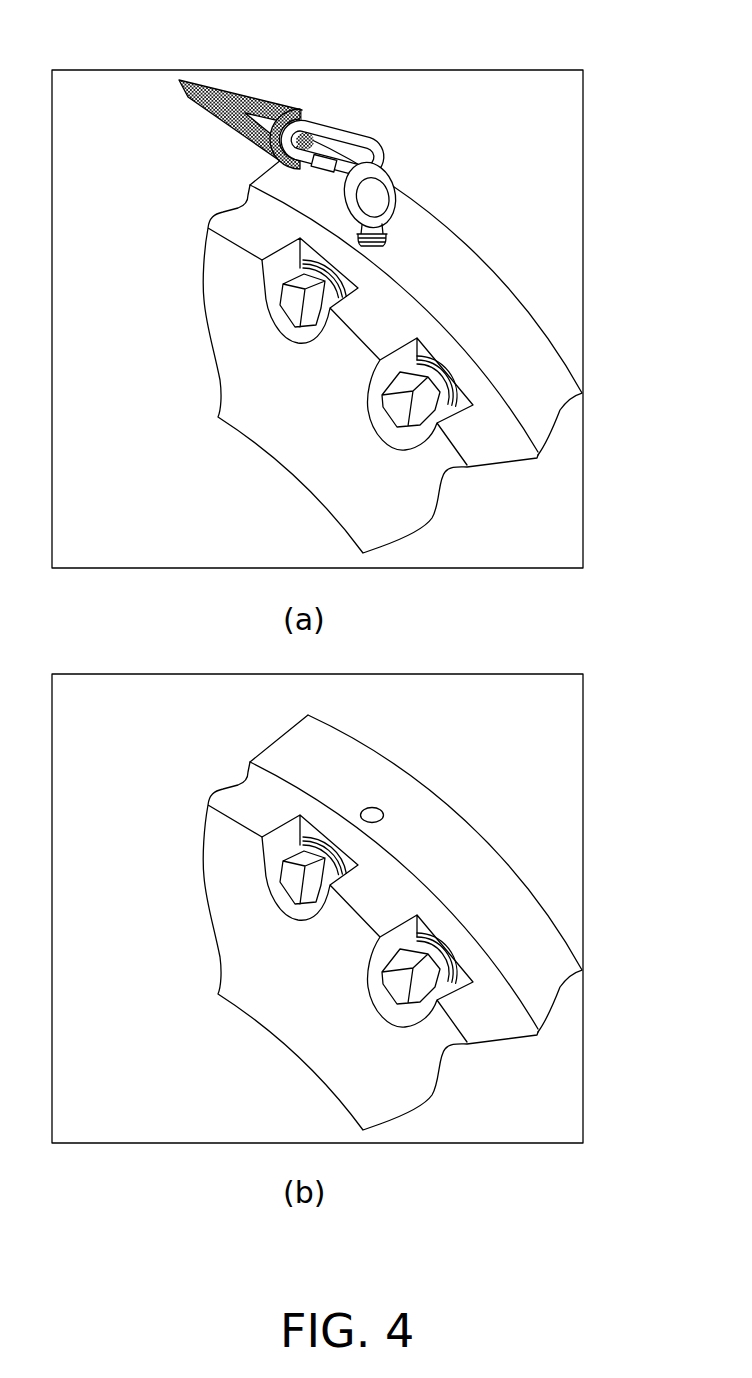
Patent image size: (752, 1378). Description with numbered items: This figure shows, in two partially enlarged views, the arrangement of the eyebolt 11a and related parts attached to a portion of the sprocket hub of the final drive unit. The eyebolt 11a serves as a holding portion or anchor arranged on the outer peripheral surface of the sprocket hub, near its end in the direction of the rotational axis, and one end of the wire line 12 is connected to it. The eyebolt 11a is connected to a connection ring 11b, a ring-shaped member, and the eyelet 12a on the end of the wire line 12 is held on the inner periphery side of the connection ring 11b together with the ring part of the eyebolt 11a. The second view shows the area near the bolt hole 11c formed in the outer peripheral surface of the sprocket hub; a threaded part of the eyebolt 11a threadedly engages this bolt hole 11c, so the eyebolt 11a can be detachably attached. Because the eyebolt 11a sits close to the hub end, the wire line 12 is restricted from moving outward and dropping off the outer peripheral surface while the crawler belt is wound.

The wire line 12 is at (200, 84).
The eyelet 12a is at (284, 108).
The connection ring 11b is at (345, 138).
The eyebolt 11a is at (423, 176).
The bolt hole 11c is at (417, 788).